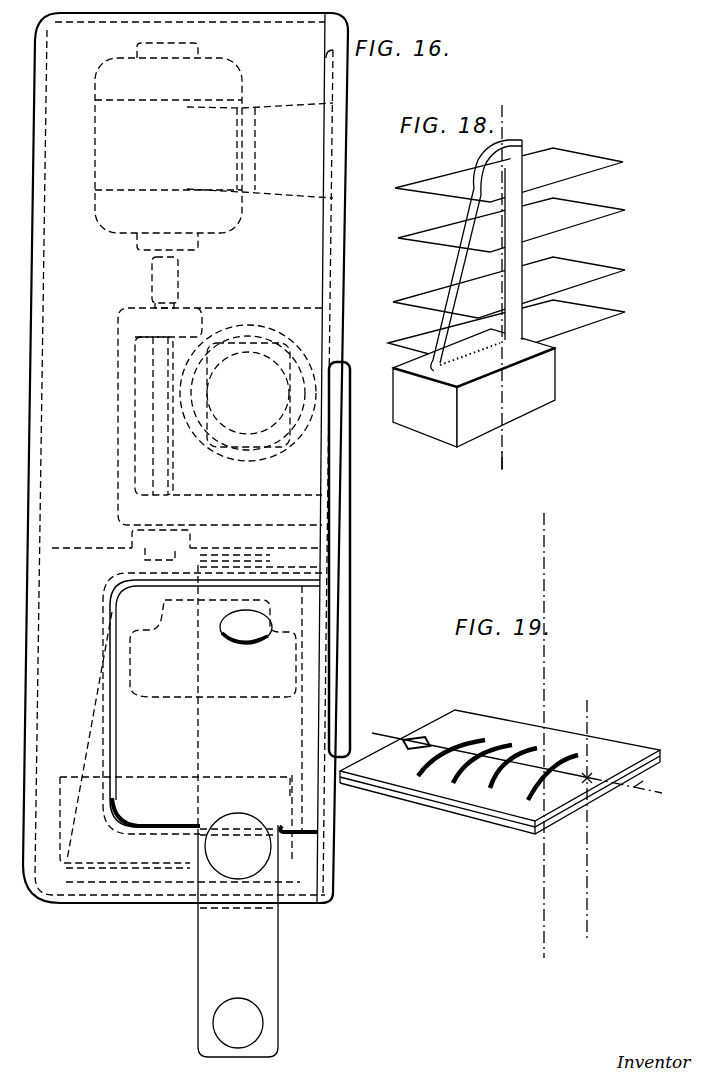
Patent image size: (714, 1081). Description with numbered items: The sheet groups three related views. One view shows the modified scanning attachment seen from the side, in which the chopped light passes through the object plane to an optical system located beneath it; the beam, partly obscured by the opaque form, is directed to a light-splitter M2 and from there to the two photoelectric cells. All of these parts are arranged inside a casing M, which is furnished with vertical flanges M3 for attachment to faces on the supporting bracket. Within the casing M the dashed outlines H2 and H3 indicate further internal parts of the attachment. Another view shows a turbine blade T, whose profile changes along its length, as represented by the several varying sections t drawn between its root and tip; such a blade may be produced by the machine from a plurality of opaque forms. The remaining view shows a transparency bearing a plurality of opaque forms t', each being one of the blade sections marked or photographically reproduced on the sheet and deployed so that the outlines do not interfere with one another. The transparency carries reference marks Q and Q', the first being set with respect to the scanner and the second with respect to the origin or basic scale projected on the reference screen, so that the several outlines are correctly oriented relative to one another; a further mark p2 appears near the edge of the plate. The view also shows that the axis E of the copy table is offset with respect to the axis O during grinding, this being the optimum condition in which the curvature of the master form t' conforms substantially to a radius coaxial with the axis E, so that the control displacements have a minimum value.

In FIG. 16, the casing M is at (48, 878).
In FIG. 16, the light-splitter M2 is at (266, 622).
In FIG. 16, the vertical flanges M3 is at (343, 552).
In FIG. 16, the receiver unit H2 is at (232, 222).
In FIG. 16, the partition of casing H3 is at (68, 547).
In FIG. 18, the turbine blade T is at (512, 157).
In FIG. 18, the varying sections t is at (519, 251).
In FIG. 18, the axis O is at (503, 461).
In FIG. 19, the axis O is at (545, 608).
In FIG. 19, the axis of the copy table E is at (588, 888).
In FIG. 19, the reference mark Q is at (416, 719).
In FIG. 19, the reference mark Q' is at (517, 748).
In FIG. 19, the opaque forms t' is at (498, 740).
In FIG. 19, the contact plate p2 is at (648, 777).